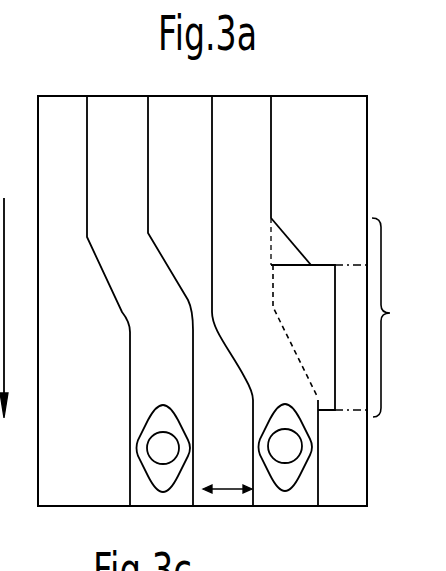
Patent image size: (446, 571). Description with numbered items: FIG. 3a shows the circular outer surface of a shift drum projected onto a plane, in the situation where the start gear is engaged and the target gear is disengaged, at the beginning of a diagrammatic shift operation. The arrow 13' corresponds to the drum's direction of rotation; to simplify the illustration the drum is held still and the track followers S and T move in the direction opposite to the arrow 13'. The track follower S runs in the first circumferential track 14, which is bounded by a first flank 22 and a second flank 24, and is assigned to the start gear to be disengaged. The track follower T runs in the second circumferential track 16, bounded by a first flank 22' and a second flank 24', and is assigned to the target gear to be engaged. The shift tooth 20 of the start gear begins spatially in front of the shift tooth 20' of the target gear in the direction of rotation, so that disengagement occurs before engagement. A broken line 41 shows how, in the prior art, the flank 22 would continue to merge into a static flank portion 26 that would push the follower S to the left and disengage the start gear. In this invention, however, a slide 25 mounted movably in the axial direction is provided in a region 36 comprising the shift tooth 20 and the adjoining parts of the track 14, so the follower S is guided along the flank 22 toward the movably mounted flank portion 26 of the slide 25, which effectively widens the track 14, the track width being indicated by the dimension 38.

The arrow 13' is at (14, 292).
The first circumferential track 14 is at (249, 138).
The second circumferential track 16 is at (128, 143).
The shift tooth 20 is at (262, 403).
The shift tooth 20' is at (125, 391).
The first flank 22 is at (343, 301).
The first flank 22' is at (170, 301).
The second flank 24 is at (213, 301).
The second flank 24' is at (108, 301).
The slide 25 is at (313, 300).
The flank portion 26 is at (299, 366).
The region 36 is at (393, 317).
The gap width 38 is at (228, 492).
The broken line 41 is at (272, 240).
The track follower S is at (287, 443).
The track follower T is at (163, 452).